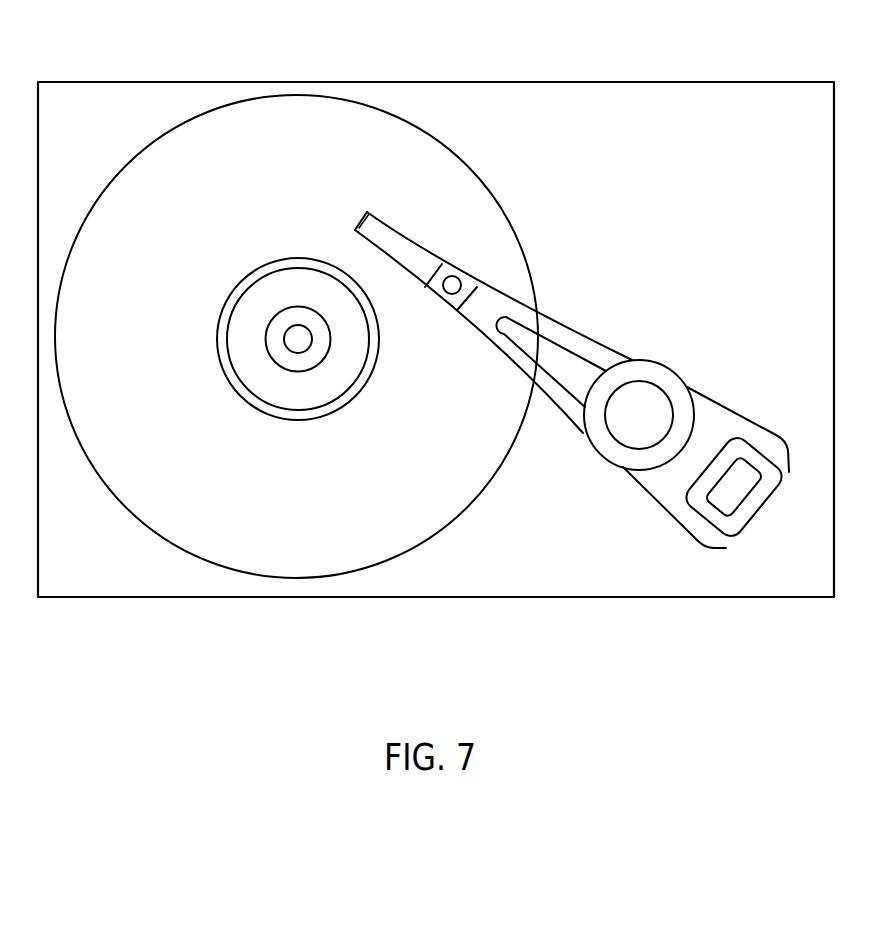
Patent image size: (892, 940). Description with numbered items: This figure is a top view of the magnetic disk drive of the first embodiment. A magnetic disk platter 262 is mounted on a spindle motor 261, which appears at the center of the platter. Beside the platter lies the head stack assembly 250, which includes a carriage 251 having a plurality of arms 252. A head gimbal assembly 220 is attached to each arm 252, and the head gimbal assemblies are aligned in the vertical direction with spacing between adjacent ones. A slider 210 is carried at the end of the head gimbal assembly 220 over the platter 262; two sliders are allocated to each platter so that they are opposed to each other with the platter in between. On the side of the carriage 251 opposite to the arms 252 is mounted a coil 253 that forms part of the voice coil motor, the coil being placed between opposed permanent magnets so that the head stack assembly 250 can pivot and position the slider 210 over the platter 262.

The slider 210 is at (382, 243).
The head gimbal assembly 220 is at (421, 278).
The head stack assembly 250 is at (643, 489).
The carriage 251 is at (650, 361).
The arm 252 is at (565, 403).
The coil 253 is at (769, 500).
The spindle motor 261 is at (298, 353).
The magnetic disk platter 262 is at (210, 564).